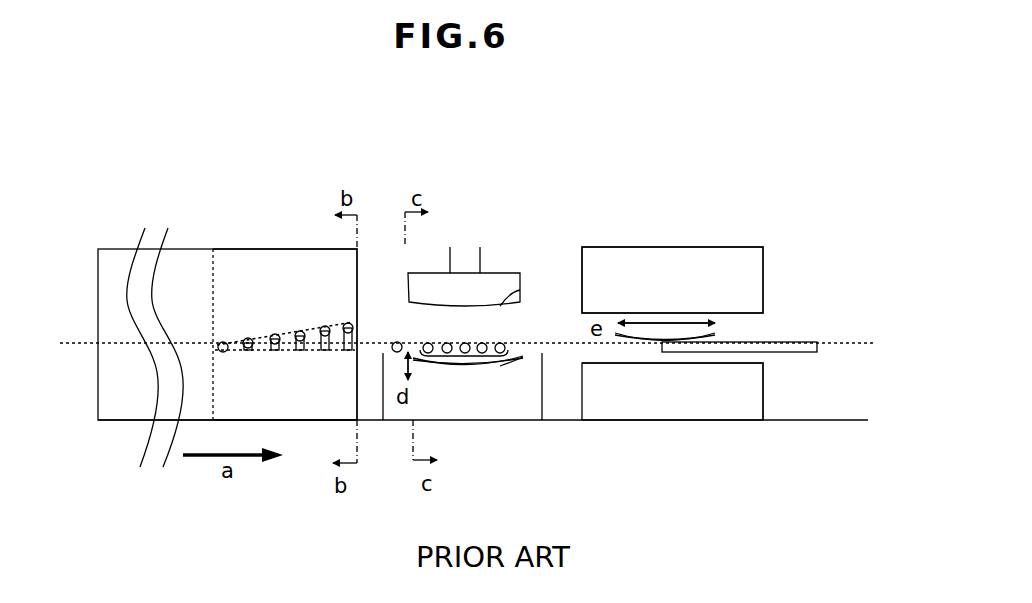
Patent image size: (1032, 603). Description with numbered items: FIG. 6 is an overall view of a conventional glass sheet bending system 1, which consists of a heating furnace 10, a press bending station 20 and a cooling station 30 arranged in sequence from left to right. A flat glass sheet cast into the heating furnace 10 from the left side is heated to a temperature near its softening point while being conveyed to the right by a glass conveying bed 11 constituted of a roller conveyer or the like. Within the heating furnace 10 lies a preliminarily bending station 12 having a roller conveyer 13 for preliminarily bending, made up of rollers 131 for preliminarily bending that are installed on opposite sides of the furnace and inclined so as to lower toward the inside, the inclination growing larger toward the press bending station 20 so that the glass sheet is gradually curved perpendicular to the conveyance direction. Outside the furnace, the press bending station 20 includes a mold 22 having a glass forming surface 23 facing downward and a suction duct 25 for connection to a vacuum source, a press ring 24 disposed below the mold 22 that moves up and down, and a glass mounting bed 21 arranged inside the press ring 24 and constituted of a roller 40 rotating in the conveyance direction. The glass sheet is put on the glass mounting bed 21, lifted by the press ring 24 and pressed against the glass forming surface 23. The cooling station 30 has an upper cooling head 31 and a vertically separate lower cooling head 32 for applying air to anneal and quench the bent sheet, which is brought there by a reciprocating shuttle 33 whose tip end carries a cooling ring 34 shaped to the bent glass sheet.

The glass sheet bending system 1 is at (703, 186).
The heating furnace 10 is at (212, 213).
The glass conveying bed 11 is at (132, 348).
The preliminarily bending station 12 is at (282, 249).
The roller conveyer for preliminarily bending 13 is at (215, 353).
The roller for preliminarily bending 131 is at (325, 326).
The press bending station 20 is at (463, 210).
The glass mounting bed 21 is at (468, 366).
The mold 22 is at (492, 273).
The glass forming surface 23 is at (510, 300).
The press ring 24 is at (513, 362).
The suction duct 25 is at (466, 250).
The cooling station 30 is at (713, 238).
The upper cooling head 31 is at (600, 247).
The lower cooling head 32 is at (648, 420).
The shuttle 33 is at (776, 352).
The cooling ring 34 is at (742, 334).
The roller 40 is at (500, 343).